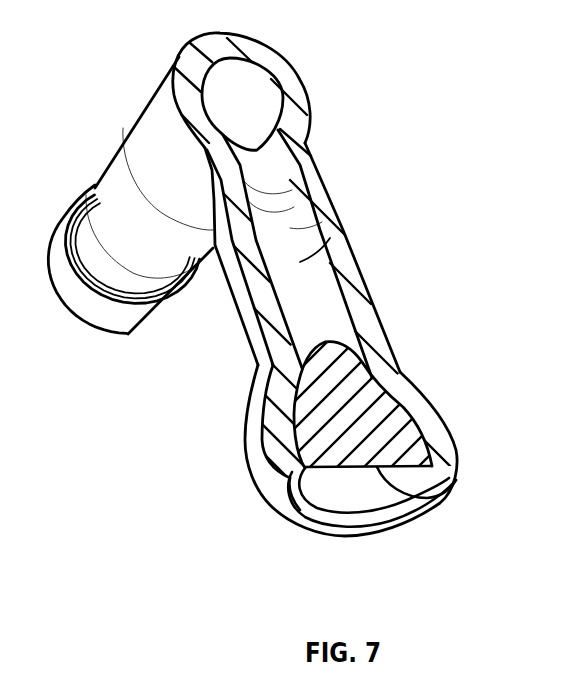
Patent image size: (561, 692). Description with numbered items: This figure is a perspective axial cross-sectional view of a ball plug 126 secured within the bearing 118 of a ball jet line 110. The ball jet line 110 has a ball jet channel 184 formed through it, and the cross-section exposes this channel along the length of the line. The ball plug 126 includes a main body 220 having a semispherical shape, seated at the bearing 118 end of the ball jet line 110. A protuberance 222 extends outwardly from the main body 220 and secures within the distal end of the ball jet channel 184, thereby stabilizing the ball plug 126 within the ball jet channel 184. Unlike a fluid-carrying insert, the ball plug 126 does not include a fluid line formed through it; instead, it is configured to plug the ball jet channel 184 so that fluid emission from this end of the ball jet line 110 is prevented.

The ball jet line 110 is at (366, 292).
The ball jet channel 184 is at (300, 260).
The protuberance 222 is at (346, 364).
The main body 220 is at (340, 492).
The bearing 118 is at (282, 508).
The ball plug 126 is at (387, 488).